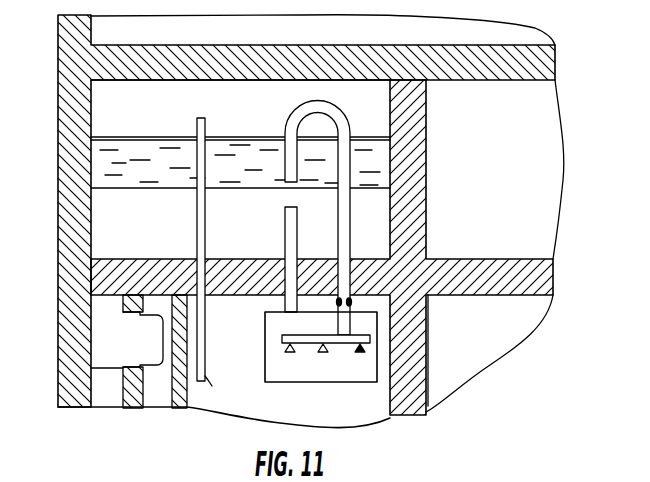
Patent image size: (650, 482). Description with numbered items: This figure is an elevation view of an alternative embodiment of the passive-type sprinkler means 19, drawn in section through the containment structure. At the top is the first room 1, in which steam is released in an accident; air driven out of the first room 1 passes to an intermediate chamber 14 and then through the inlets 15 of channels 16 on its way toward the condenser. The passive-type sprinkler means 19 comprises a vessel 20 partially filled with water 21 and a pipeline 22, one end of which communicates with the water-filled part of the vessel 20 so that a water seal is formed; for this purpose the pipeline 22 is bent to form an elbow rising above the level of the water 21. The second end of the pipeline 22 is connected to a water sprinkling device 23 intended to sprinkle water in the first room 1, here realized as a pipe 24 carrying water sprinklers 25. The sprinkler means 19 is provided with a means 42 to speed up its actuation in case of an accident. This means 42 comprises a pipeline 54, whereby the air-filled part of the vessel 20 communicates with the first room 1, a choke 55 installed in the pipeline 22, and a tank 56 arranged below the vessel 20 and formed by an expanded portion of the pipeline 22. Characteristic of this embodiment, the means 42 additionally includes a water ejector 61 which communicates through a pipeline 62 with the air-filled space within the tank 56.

The first room 1 is at (364, 414).
The intermediate chamber 14 is at (160, 398).
The inlets 15 is at (106, 367).
The channels 16 is at (110, 398).
The passive-type sprinkler means 19 is at (117, 113).
The vessel 20 is at (93, 178).
The water 21 is at (100, 168).
The pipeline 22 is at (352, 150).
The water sprinkling device 23 is at (314, 356).
The pipe 24 is at (371, 339).
The water sprinklers 25 is at (358, 352).
The means to speed up the actuation 42 is at (214, 125).
The pipeline 54 is at (219, 389).
The choke 55 is at (352, 302).
The tank 56 is at (100, 227).
The water ejector 61 is at (378, 368).
The pipeline 62 is at (282, 305).